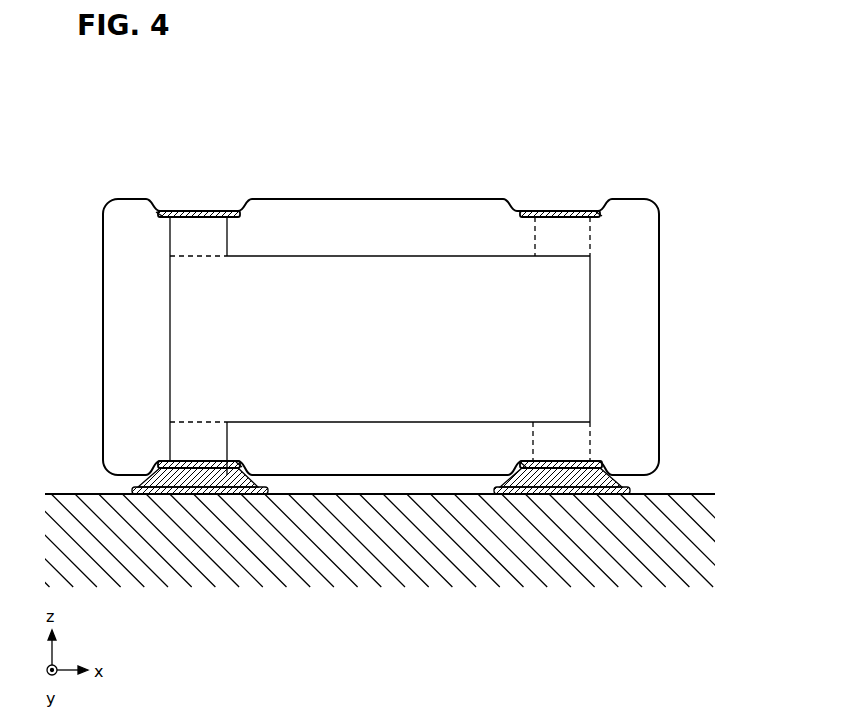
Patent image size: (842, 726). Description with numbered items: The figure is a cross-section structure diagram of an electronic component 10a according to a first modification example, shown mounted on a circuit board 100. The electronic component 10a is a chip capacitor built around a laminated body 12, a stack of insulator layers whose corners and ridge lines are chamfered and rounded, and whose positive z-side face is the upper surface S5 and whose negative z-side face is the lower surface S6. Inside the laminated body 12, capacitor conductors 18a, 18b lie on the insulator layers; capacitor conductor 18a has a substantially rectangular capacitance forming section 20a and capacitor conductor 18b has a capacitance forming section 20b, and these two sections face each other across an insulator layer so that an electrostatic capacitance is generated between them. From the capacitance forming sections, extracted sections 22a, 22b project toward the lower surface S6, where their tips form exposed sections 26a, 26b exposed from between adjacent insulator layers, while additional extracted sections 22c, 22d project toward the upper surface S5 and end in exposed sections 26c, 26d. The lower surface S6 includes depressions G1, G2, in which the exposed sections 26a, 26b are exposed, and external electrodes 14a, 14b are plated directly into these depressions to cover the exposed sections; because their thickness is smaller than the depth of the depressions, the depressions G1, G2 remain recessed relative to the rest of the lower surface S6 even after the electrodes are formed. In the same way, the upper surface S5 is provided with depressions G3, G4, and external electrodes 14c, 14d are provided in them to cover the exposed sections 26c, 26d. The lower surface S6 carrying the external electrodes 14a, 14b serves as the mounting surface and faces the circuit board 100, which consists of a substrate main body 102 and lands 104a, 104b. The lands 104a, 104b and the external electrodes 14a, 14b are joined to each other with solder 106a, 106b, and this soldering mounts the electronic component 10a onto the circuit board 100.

The electronic component 10a is at (112, 124).
The laminated body 12 is at (293, 199).
The external electrode 14a is at (172, 461).
The external electrode 14b is at (605, 463).
The external electrode 14c is at (170, 211).
The external electrode 14d is at (575, 211).
The capacitor conductor 18a is at (408, 320).
The capacitor conductor 18b is at (320, 256).
The capacitance forming section 20a is at (482, 339).
The capacitance forming section 20b is at (580, 321).
The extracted section 22a is at (210, 443).
The extracted section 22b is at (568, 440).
The extracted section 22c is at (210, 238).
The extracted section 22d is at (558, 228).
The exposed section 26a is at (245, 474).
The exposed section 26b is at (537, 462).
The exposed section 26c is at (180, 215).
The exposed section 26d is at (583, 216).
The depression G1 is at (212, 494).
The depression G2 is at (550, 494).
The depression G3 is at (190, 211).
The depression G4 is at (541, 210).
The upper surface S5 is at (377, 199).
The lower surface S6 is at (423, 464).
The circuit board 100 is at (722, 540).
The substrate main body 102 is at (713, 494).
The land 104a is at (197, 494).
The land 104b is at (568, 494).
The solder 106a is at (135, 488).
The solder 106b is at (595, 494).